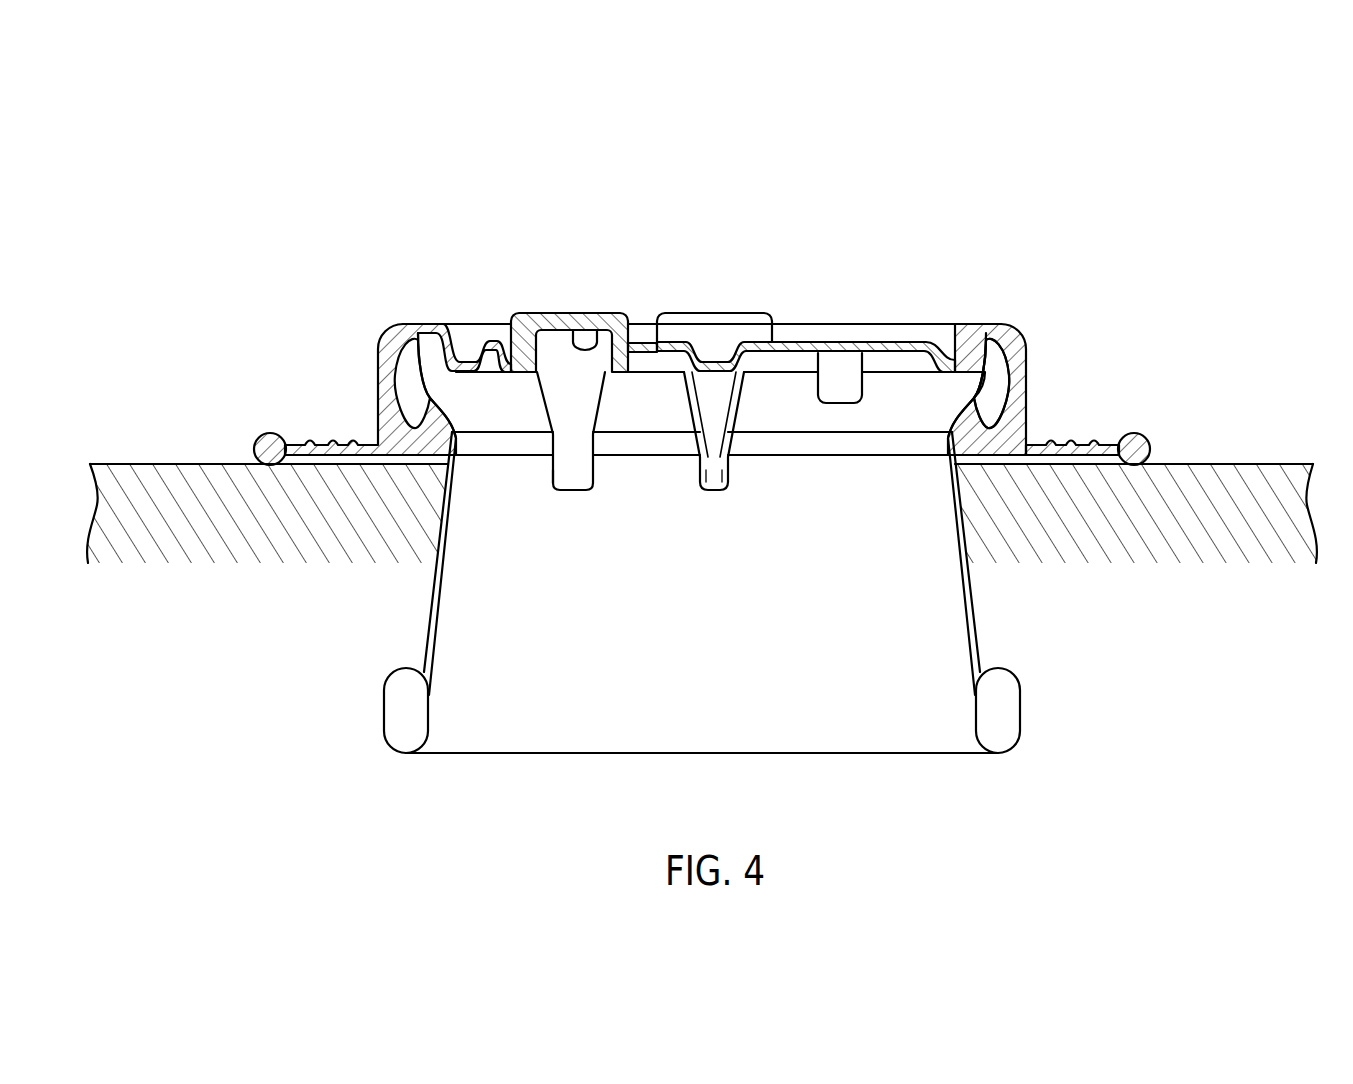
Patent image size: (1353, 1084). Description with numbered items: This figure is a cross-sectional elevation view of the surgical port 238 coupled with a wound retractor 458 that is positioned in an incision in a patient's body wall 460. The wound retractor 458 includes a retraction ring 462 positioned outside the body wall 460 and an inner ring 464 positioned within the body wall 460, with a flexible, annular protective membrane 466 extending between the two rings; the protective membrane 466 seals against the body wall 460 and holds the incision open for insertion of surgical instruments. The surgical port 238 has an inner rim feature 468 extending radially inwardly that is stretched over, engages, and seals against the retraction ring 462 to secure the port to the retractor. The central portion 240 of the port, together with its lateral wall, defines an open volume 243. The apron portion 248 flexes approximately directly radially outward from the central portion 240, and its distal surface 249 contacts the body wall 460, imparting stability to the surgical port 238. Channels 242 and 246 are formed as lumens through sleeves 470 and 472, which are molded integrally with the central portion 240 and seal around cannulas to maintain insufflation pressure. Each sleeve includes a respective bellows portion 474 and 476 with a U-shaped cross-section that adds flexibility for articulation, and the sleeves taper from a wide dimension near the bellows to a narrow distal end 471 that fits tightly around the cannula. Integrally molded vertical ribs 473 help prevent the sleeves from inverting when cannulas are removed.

The surgical port 238 is at (732, 353).
The central portion 240 is at (732, 400).
The channel 242 is at (556, 384).
The open volume 243 is at (953, 383).
The channel 246 is at (741, 331).
The apron portion 248 is at (1129, 436).
The distal surface 249 is at (1055, 455).
The wound retractor 458 is at (726, 549).
The body wall 460 is at (165, 463).
The retraction ring 462 is at (992, 389).
The inner ring 464 is at (400, 730).
The protective membrane 466 is at (436, 616).
The inner rim feature 468 is at (951, 463).
The sleeve 470 is at (549, 391).
The distal end 471 is at (577, 520).
The sleeve 472 is at (748, 398).
The vertical ribs 473 is at (723, 457).
The bellows portion 474 is at (542, 313).
The bellows portion 476 is at (741, 312).